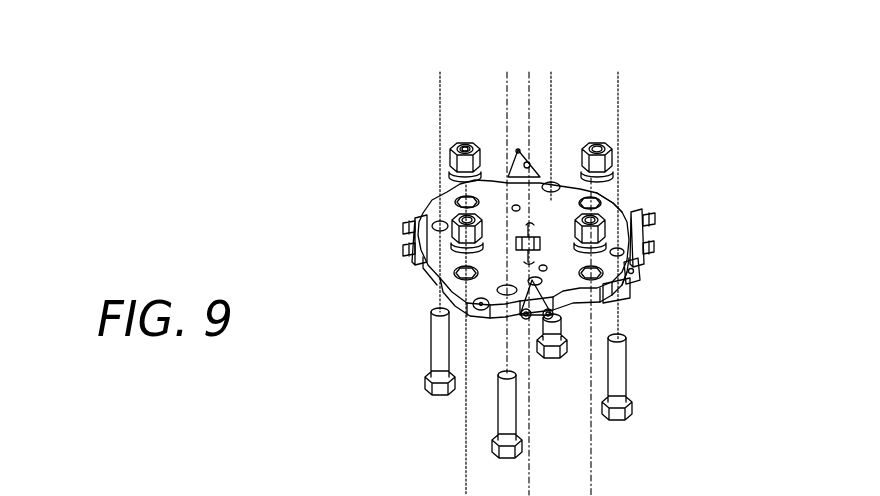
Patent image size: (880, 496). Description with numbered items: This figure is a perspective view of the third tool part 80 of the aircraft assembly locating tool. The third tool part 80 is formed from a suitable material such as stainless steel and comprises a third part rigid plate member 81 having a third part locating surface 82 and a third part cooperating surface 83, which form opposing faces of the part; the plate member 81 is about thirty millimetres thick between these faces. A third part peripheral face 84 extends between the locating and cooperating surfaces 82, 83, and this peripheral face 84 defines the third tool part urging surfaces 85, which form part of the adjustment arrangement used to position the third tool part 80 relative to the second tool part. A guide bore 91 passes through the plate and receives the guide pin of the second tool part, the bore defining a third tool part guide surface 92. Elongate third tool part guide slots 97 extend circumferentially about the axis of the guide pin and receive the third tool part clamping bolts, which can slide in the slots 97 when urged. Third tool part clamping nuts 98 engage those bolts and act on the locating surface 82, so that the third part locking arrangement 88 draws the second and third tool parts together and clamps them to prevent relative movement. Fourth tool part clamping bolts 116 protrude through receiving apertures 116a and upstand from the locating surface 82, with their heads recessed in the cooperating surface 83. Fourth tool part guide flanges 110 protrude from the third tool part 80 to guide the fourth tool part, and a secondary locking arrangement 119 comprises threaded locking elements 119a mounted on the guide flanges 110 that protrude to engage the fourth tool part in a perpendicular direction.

The third tool part 80 is at (110, 152).
The third part rigid plate member 81 is at (457, 191).
The third part locating surface 82 is at (637, 256).
The third part cooperating surface 83 is at (620, 285).
The third part peripheral face 84 is at (455, 285).
The third tool part urging surfaces 85 is at (606, 192).
The third part locking arrangement 88 is at (457, 150).
The guide bore 91 is at (530, 220).
The third tool part guide surface 92 is at (514, 258).
The third tool part guide slots 97 is at (455, 200).
The third tool part clamping nuts 98 is at (465, 145).
The fourth tool part guide flanges 110 is at (518, 150).
The fourth tool part clamping bolts 116 is at (441, 348).
The receiving apertures 116a is at (638, 237).
The secondary locking arrangement 119 is at (530, 318).
The locking elements 119a is at (639, 217).